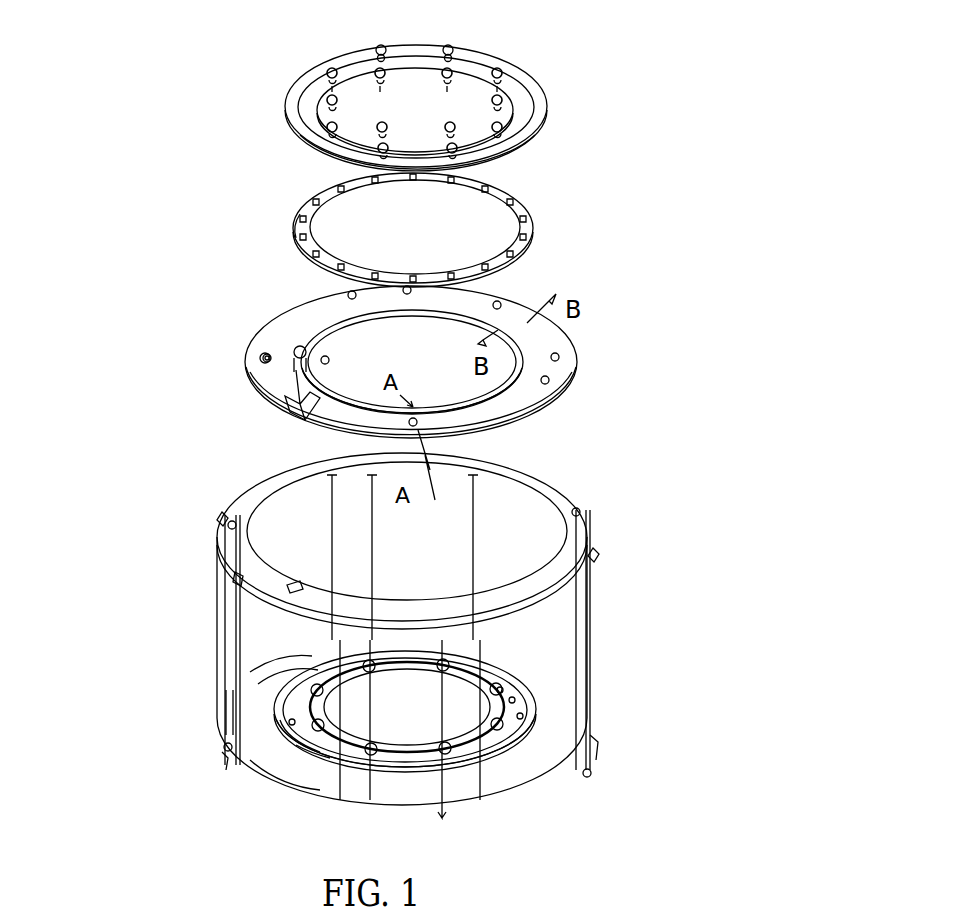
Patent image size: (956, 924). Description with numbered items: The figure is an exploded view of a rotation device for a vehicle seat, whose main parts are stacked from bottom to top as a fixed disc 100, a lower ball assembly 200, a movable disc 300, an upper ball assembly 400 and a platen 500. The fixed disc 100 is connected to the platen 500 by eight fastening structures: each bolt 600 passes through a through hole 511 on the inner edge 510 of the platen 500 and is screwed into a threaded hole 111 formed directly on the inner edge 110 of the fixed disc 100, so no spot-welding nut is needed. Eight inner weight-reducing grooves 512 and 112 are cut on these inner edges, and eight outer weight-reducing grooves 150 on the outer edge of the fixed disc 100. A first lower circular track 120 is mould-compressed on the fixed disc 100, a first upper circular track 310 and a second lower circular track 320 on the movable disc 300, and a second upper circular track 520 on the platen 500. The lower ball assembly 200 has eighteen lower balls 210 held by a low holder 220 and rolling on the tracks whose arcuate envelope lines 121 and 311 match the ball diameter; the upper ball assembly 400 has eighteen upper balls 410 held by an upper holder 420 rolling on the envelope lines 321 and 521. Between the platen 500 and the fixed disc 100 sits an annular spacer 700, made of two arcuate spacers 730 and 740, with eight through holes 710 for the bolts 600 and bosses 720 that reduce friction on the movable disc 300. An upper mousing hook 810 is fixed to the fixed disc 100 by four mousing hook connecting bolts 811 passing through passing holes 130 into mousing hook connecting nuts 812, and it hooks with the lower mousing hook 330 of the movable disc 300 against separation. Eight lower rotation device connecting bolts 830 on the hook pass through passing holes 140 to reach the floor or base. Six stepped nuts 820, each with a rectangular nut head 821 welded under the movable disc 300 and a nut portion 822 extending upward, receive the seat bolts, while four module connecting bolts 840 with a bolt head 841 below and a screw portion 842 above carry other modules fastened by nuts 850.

The fixed disc 100 is at (550, 790).
The inner edge of the fixed disc 110 is at (366, 697).
The threaded hole 111 is at (305, 745).
The inner weight-reducing groove 112 is at (345, 690).
The first lower circular track 120 is at (172, 706).
The arcuate envelope line of the first lower circular track 121 is at (229, 712).
The upper mousing hook connecting bolt passing hole 130 is at (600, 742).
The rotation device connecting bolt passing hole 140 is at (224, 755).
The outer weight-reducing groove 150 is at (280, 785).
The lower ball assembly 200 is at (469, 785).
The lower ball 210 is at (523, 710).
The low holder 220 is at (330, 770).
The movable disc 300 is at (571, 406).
The first upper circular track 310 is at (451, 418).
The arcuate envelope line of the first upper circular track 311 is at (530, 400).
The second lower circular track 320 is at (228, 332).
The arcuate envelope line of the second lower circular track 321 is at (296, 347).
The lower mousing hook 330 is at (578, 396).
The upper ball assembly 400 is at (540, 222).
The upper ball 410 is at (517, 200).
The upper holder 420 is at (296, 238).
The platen 500 is at (545, 114).
The inner edge of the platen 510 is at (414, 86).
The through hole 511 is at (452, 70).
The inner weight-reducing groove 512 is at (414, 70).
The second upper circular track 520 is at (478, 113).
The arcuate envelope line of the second upper circular track 521 is at (417, 152).
The bolt 600 is at (381, 46).
The spacer 700 is at (403, 776).
The through hole 710 is at (234, 768).
The boss 720 is at (515, 700).
The arcuate spacer 730 is at (505, 690).
The arcuate spacer 740 is at (288, 726).
The upper mousing hook 810 is at (590, 583).
The mousing hook connecting bolt 811 is at (596, 553).
The mousing hook connecting nut 812 is at (592, 774).
The stepped nut 820 is at (165, 387).
The nut head 821 is at (265, 358).
The nut portion 822 is at (262, 360).
The lower rotation device connecting bolt 830 is at (235, 572).
The module connecting bolt 840 is at (215, 417).
The bolt head 841 is at (302, 395).
The screw portion 842 is at (286, 406).
The nut 850 is at (262, 337).